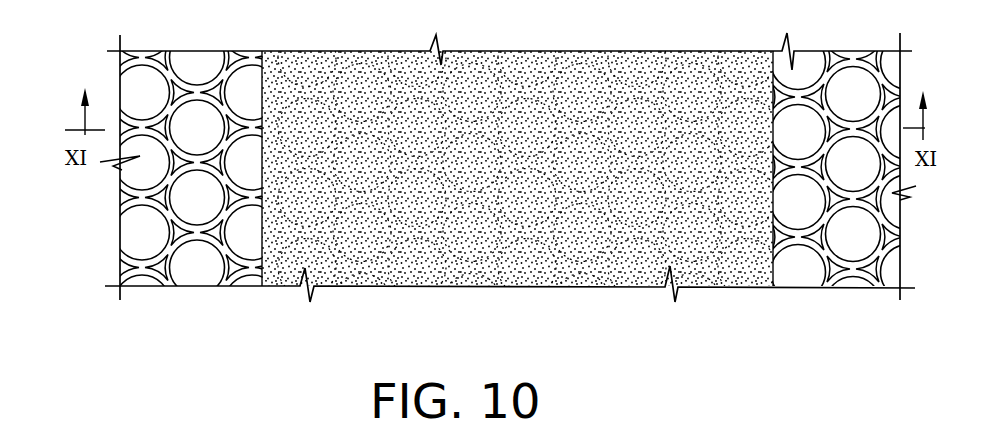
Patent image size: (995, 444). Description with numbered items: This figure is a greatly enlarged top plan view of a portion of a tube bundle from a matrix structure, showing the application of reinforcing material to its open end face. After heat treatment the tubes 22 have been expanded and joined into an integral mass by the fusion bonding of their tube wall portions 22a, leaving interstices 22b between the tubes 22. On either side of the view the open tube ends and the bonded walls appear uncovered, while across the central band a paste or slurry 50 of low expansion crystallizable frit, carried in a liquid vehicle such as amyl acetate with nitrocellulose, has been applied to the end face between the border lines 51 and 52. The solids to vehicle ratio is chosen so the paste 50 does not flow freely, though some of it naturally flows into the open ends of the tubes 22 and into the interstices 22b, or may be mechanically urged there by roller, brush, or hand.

The tubes 22 is at (210, 257).
The tube wall portions 22a is at (197, 96).
The interstices 22b is at (188, 96).
The paste or slurry 50 is at (617, 90).
The border line 51 is at (263, 96).
The border line 52 is at (776, 287).